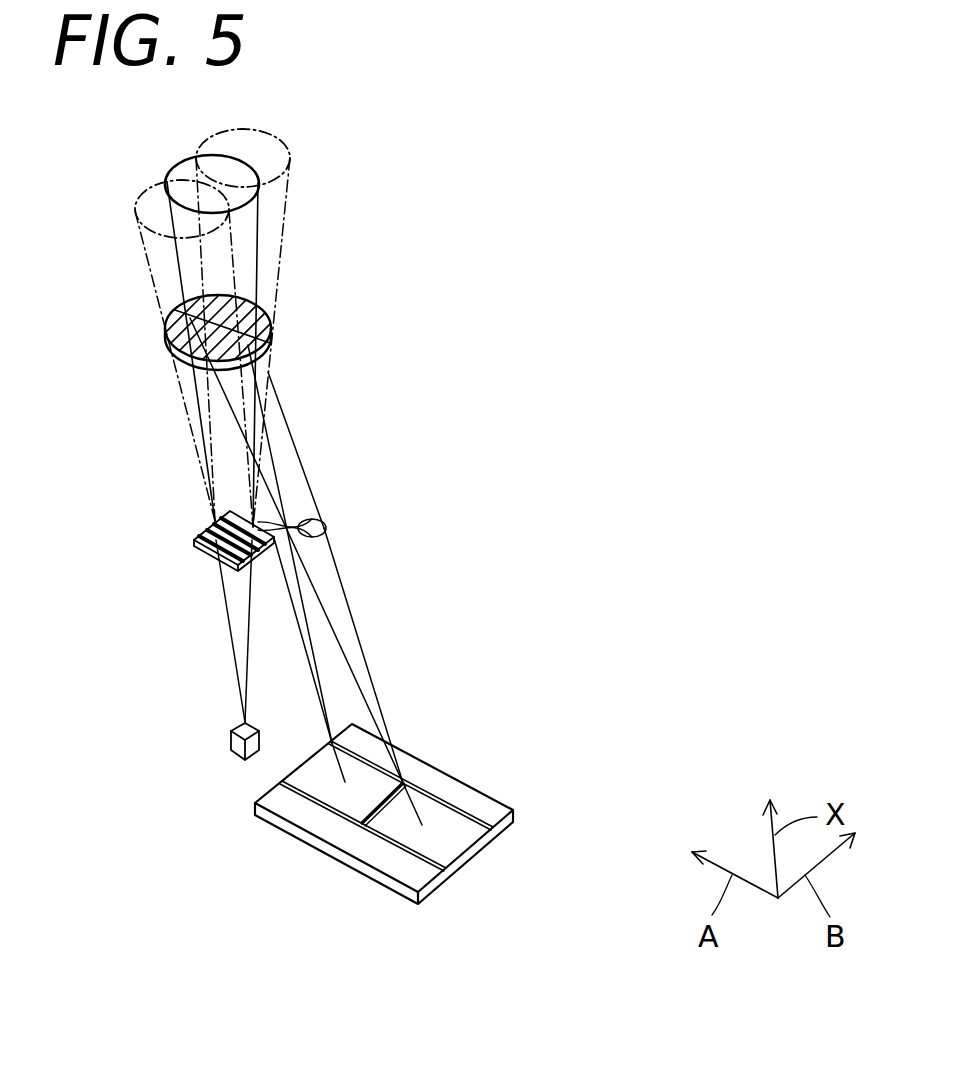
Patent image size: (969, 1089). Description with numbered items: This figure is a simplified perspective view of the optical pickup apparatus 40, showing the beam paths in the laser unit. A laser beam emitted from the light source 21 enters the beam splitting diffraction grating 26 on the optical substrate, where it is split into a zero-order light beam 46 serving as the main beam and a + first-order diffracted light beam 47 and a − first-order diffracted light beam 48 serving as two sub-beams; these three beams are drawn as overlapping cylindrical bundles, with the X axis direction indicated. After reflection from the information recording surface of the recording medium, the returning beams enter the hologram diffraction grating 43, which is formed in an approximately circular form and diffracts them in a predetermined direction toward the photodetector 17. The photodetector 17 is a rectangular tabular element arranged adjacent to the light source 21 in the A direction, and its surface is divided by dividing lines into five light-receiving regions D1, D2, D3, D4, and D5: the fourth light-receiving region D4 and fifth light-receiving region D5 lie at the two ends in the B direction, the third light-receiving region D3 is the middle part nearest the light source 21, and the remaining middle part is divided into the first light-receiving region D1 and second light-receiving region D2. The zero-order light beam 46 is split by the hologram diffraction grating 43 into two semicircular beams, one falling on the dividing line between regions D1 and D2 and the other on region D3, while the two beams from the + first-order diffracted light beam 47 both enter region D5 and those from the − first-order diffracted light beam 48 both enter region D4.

The optical pickup apparatus 40 is at (510, 192).
The zero-order light beam 46 is at (173, 165).
The + first-order diffracted light beam 47 is at (137, 200).
The − first-order diffracted light beam 48 is at (275, 133).
The hologram diffraction grating 43 is at (262, 345).
The beam splitting diffraction grating 26 is at (195, 542).
The light source 21 is at (231, 732).
The photodetector 17 is at (550, 807).
The first light-receiving region D1 is at (447, 815).
The second light-receiving region D2 is at (448, 852).
The third light-receiving region D3 is at (322, 792).
The fourth light-receiving region D4 is at (427, 770).
The fifth light-receiving region D5 is at (360, 842).